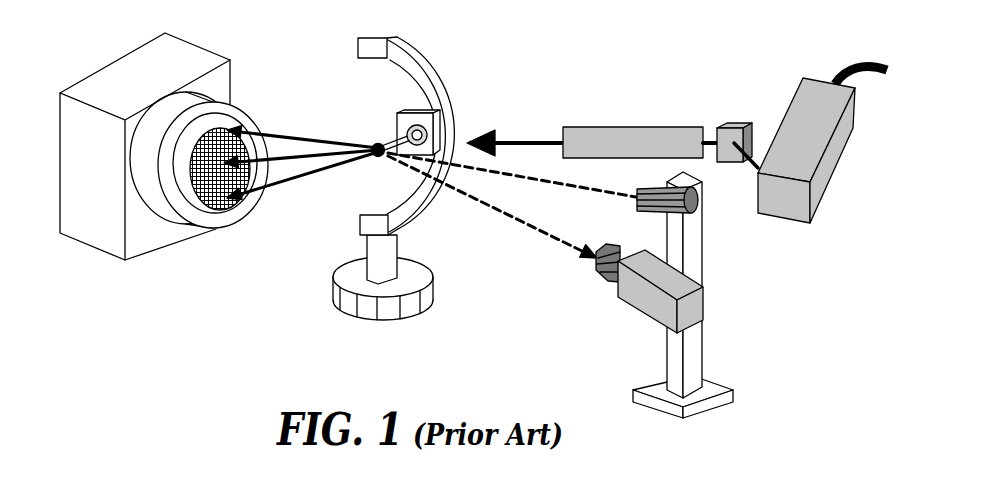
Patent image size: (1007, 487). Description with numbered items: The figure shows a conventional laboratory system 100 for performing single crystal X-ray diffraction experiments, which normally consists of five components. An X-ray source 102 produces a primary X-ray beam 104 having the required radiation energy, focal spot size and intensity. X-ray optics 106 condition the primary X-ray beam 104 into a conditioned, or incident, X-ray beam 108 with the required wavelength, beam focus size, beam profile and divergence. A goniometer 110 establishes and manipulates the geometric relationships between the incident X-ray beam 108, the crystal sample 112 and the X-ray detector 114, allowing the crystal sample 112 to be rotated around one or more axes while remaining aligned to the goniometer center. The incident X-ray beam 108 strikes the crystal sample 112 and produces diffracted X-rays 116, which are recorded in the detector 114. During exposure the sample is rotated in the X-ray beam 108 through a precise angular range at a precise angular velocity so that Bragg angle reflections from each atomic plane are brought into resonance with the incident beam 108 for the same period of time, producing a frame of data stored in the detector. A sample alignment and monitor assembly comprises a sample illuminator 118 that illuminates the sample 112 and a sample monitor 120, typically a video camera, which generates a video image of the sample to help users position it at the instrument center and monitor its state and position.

The laboratory system 100 is at (200, 360).
The X-ray source 102 is at (800, 145).
The primary X-ray beam 104 is at (757, 150).
The X-ray optics 106 is at (757, 105).
The incident X-ray beam 108 is at (523, 138).
The goniometer 110 is at (353, 282).
The crystal sample 112 is at (372, 145).
The X-ray detector 114 is at (97, 220).
The diffracted X-rays 116 is at (303, 178).
The sample illuminator 118 is at (698, 210).
The sample monitor 120 is at (645, 300).